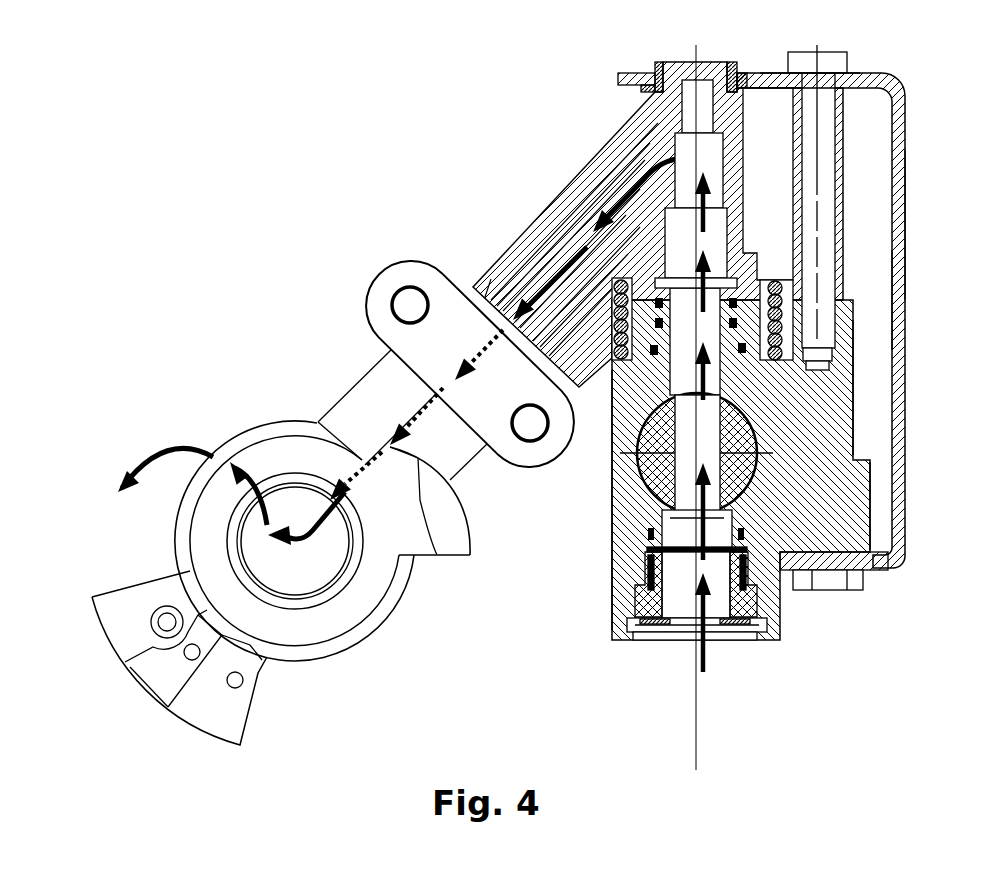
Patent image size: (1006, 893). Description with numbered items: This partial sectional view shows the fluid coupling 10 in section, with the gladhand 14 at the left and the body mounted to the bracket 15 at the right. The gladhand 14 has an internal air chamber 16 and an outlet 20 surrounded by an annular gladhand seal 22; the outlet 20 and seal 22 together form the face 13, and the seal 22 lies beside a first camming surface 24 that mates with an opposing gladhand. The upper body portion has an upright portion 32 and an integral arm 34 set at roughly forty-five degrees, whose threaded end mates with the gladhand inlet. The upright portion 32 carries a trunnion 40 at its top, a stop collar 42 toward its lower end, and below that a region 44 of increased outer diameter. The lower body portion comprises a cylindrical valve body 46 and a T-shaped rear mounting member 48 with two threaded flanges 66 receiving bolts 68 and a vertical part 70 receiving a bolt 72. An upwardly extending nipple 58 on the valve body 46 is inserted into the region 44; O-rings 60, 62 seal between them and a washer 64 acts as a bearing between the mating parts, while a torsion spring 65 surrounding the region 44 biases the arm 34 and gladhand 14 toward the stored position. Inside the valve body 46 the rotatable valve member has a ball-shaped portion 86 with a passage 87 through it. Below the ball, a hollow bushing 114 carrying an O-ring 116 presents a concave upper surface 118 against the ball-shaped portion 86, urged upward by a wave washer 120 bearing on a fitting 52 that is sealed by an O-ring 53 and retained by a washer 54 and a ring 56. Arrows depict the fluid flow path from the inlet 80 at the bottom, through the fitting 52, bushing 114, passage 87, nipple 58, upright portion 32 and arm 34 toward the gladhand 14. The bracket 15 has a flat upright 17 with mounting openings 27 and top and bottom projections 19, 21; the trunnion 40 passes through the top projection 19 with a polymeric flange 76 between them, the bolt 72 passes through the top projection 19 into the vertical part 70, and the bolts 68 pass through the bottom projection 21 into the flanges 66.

The fluid coupling 10 is at (338, 200).
The face 13 is at (210, 532).
The gladhand 14 is at (360, 295).
The bracket 15 is at (910, 90).
The internal air chamber 16 is at (302, 577).
The flat upright 17 is at (903, 202).
The top projection 19 is at (777, 73).
The outlet 20 is at (242, 508).
The bottom projection 21 is at (893, 565).
The gladhand seal 22 is at (265, 462).
The first camming surface 24 is at (125, 605).
The openings 27 is at (905, 303).
The upright portion 32 is at (742, 145).
The arm 34 is at (547, 235).
The trunnion 40 is at (680, 64).
The stop collar 42 is at (775, 262).
The region of increased outer diameter 44 is at (612, 365).
The valve body 46 is at (604, 575).
The mounting member 48 is at (860, 452).
The fitting 52 is at (755, 575).
The O-ring 53 is at (748, 572).
The washer 54 is at (617, 620).
The ring 56 is at (650, 628).
The nipple 58 is at (725, 345).
The O-ring 60 is at (743, 347).
The O-ring 62 is at (745, 305).
The washer 64 is at (770, 350).
The torsion spring 65 is at (790, 310).
The flanges 66 is at (867, 483).
The bolt 68 is at (845, 578).
The vertical part 70 is at (848, 423).
The bolt 72 is at (825, 66).
The flange 76 is at (653, 73).
The inlet 80 is at (718, 640).
The ball-shaped portion 86 is at (757, 472).
The passage 87 is at (682, 441).
The bushing 114 is at (650, 525).
The O-ring 116 is at (655, 545).
The concave upper surface 118 is at (748, 505).
The wave washer 120 is at (760, 598).